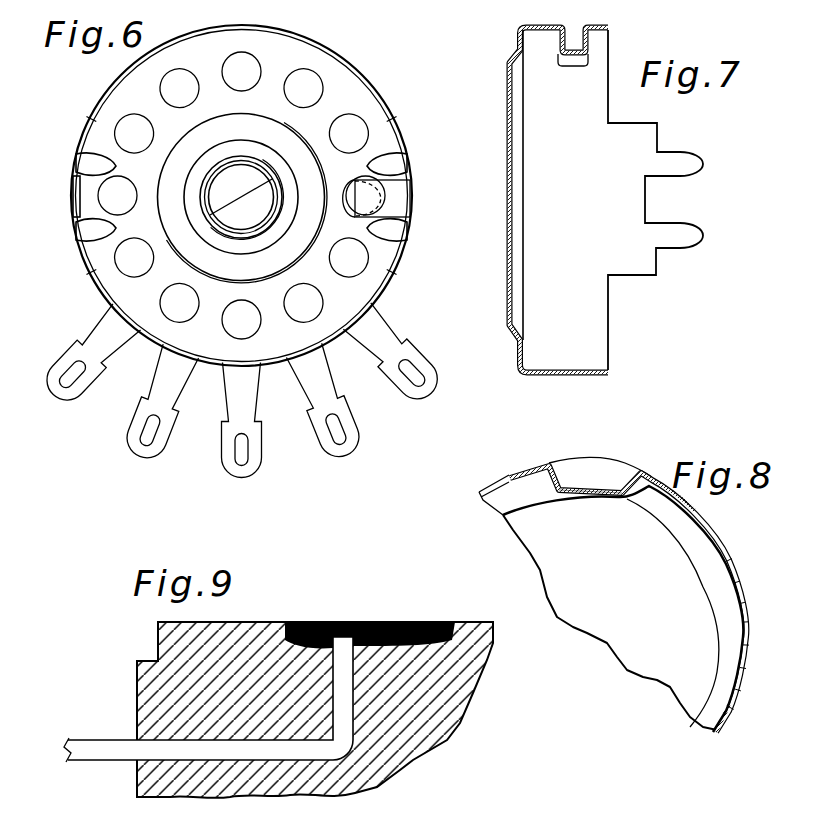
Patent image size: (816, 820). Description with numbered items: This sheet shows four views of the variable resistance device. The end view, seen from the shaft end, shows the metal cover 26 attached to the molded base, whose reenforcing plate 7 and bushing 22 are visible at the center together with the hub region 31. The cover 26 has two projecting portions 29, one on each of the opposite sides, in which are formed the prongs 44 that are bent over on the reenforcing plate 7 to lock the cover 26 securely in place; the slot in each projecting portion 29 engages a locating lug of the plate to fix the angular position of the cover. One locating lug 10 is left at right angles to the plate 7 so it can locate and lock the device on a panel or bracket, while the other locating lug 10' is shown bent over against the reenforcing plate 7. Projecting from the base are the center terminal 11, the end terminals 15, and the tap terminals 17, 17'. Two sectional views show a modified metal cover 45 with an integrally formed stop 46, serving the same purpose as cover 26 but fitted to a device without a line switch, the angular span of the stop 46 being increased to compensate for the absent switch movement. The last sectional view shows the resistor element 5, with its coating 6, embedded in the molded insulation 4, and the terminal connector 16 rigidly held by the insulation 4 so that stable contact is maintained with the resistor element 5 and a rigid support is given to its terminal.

In FIG. 6, the reenforcing plate 7 is at (275, 48).
In FIG. 6, the metal cover 26 is at (340, 48).
In FIG. 6, the projecting portions 29 is at (85, 250).
In FIG. 6, the hub boss 31 is at (231, 158).
In FIG. 6, the bushing 22 is at (272, 150).
In FIG. 6, the prongs 44 is at (90, 160).
In FIG. 6, the locating lug 10 is at (55, 193).
In FIG. 6, the locating lug 10' is at (394, 198).
In FIG. 6, the center terminal 11 is at (238, 484).
In FIG. 6, the end terminals 15 is at (140, 458).
In FIG. 6, the tap terminal 17 is at (90, 368).
In FIG. 6, the tap terminal 17' is at (394, 371).
In FIG. 7, the metal cover 45 is at (517, 34).
In FIG. 8, the metal cover 45 is at (726, 536).
In FIG. 7, the stop 46 is at (578, 63).
In FIG. 8, the stop 46 is at (568, 486).
In FIG. 9, the molded insulation 4 is at (428, 728).
In FIG. 9, the resistor element 5 is at (372, 624).
In FIG. 9, the conductive coating 6 is at (422, 624).
In FIG. 9, the terminal connector 16 is at (172, 742).